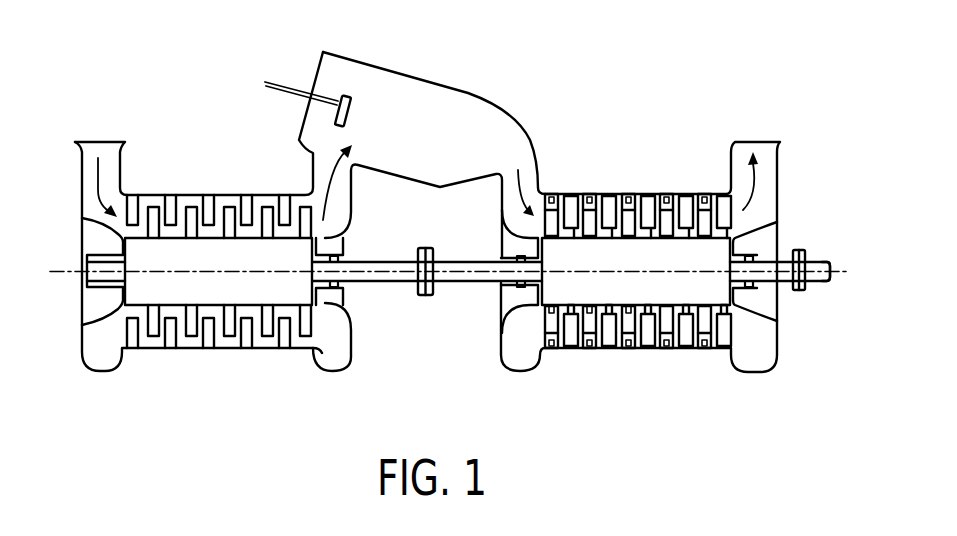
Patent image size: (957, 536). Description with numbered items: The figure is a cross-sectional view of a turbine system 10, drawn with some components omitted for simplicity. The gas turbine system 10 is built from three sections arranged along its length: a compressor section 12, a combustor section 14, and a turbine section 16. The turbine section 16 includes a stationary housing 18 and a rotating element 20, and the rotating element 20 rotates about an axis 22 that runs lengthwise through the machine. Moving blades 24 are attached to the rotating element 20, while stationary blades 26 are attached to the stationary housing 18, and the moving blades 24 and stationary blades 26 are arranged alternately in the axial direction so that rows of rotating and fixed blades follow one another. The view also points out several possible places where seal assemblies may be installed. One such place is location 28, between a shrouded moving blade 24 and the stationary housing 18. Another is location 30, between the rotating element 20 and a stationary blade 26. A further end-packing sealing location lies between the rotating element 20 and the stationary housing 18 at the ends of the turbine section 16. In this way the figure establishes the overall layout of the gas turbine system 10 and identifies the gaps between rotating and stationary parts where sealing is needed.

The turbine system 10 is at (507, 84).
The compressor section 12 is at (363, 390).
The combustor section 14 is at (517, 53).
The turbine section 16 is at (665, 311).
The stationary housing 18 is at (705, 193).
The rotating element 20 is at (782, 258).
The axis 22 is at (837, 268).
The moving blades 24 is at (666, 197).
The stationary blades 26 is at (683, 350).
The seal assembly location 28 is at (627, 350).
The seal assembly location 30 is at (628, 310).